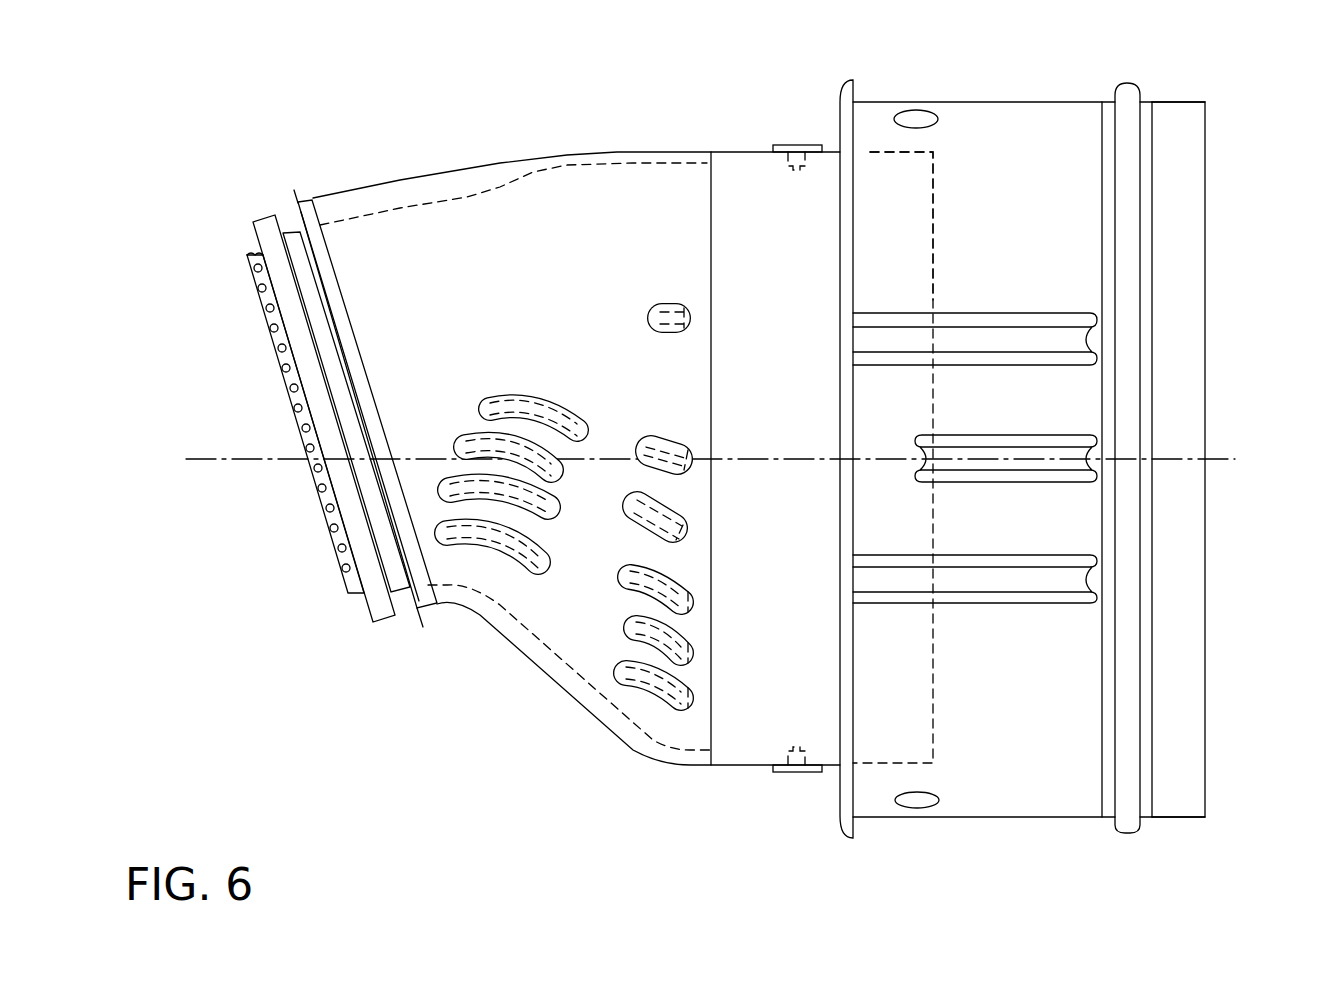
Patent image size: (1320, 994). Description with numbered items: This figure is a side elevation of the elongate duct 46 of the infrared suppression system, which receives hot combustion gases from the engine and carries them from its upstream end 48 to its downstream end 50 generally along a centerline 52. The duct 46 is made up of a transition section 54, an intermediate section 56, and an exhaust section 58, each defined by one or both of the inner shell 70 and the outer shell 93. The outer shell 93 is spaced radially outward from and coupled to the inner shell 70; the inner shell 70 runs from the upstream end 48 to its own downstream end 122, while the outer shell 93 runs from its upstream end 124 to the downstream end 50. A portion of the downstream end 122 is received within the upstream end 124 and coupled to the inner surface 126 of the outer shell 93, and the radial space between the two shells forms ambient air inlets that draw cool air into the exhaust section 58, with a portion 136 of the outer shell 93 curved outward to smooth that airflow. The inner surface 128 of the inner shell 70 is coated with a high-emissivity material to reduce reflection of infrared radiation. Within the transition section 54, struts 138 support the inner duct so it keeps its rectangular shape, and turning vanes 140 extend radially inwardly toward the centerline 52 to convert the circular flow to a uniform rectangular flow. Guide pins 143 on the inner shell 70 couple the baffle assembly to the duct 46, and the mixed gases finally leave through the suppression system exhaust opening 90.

The elongate duct 46 is at (342, 93).
The upstream end 48 is at (445, 592).
The downstream end 50 is at (1183, 805).
The centerline 52 is at (233, 450).
The transition section 54 is at (470, 316).
The intermediate section 56 is at (790, 415).
The exhaust section 58 is at (1065, 415).
The inner shell 70 is at (733, 742).
The suppression system exhaust opening 90 is at (1205, 300).
The outer shell 93 is at (1042, 108).
The downstream end of the inner shell 122 is at (933, 745).
The upstream end of the outer shell 124 is at (840, 128).
The inner surface of the outer shell 126 is at (1177, 103).
The inner surface of the inner shell 128 is at (882, 155).
The curved portion of the outer shell 136 is at (845, 82).
The struts 138 is at (656, 440).
The turning vanes 140 is at (548, 528).
The guide pins 143 is at (795, 168).